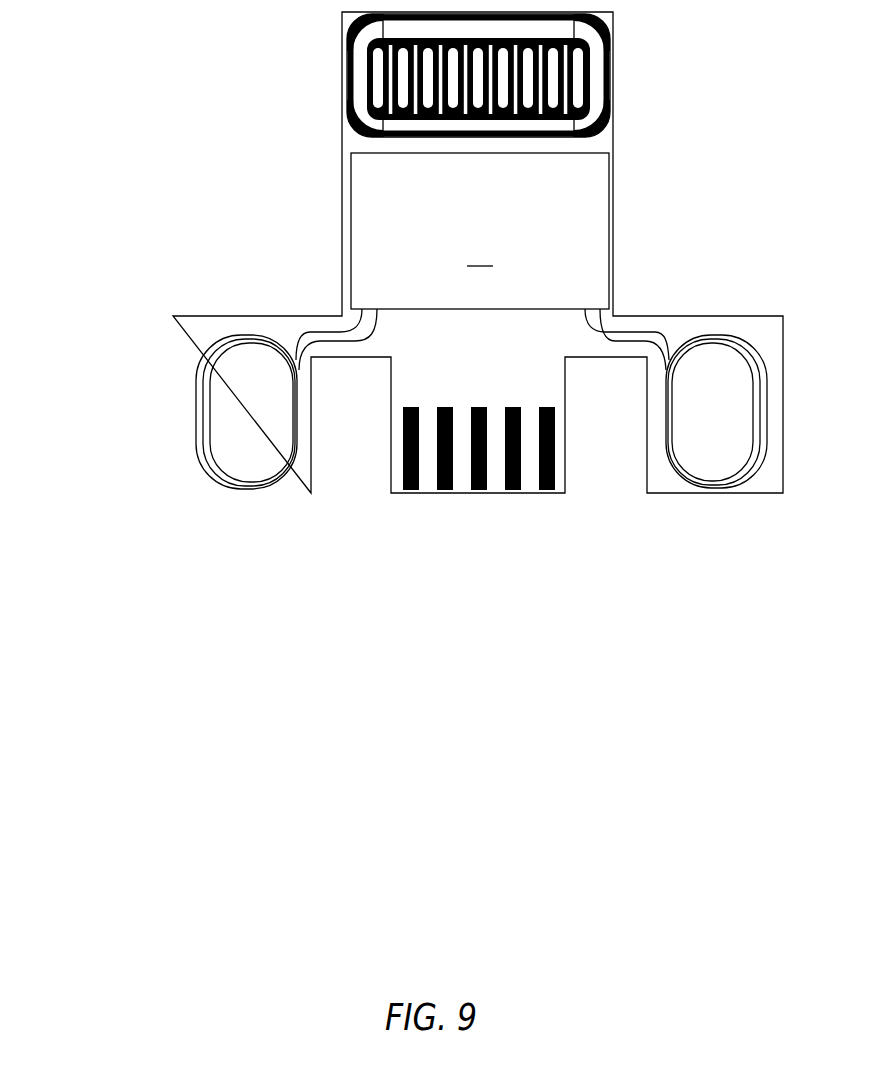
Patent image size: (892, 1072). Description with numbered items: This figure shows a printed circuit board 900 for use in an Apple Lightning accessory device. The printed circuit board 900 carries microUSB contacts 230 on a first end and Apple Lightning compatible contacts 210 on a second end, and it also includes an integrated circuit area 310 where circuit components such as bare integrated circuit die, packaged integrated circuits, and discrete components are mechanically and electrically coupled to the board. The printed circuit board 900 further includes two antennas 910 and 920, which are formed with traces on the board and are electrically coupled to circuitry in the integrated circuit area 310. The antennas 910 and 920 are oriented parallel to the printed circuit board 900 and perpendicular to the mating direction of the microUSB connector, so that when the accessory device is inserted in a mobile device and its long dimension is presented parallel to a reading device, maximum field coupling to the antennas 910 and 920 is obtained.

The printed circuit board 900 is at (117, 610).
The Apple Lightning compatible contacts 210 is at (353, 67).
The integrated circuit area 310 is at (480, 231).
The microUSB contacts 230 is at (412, 493).
The antenna 910 is at (196, 403).
The antenna 920 is at (714, 493).